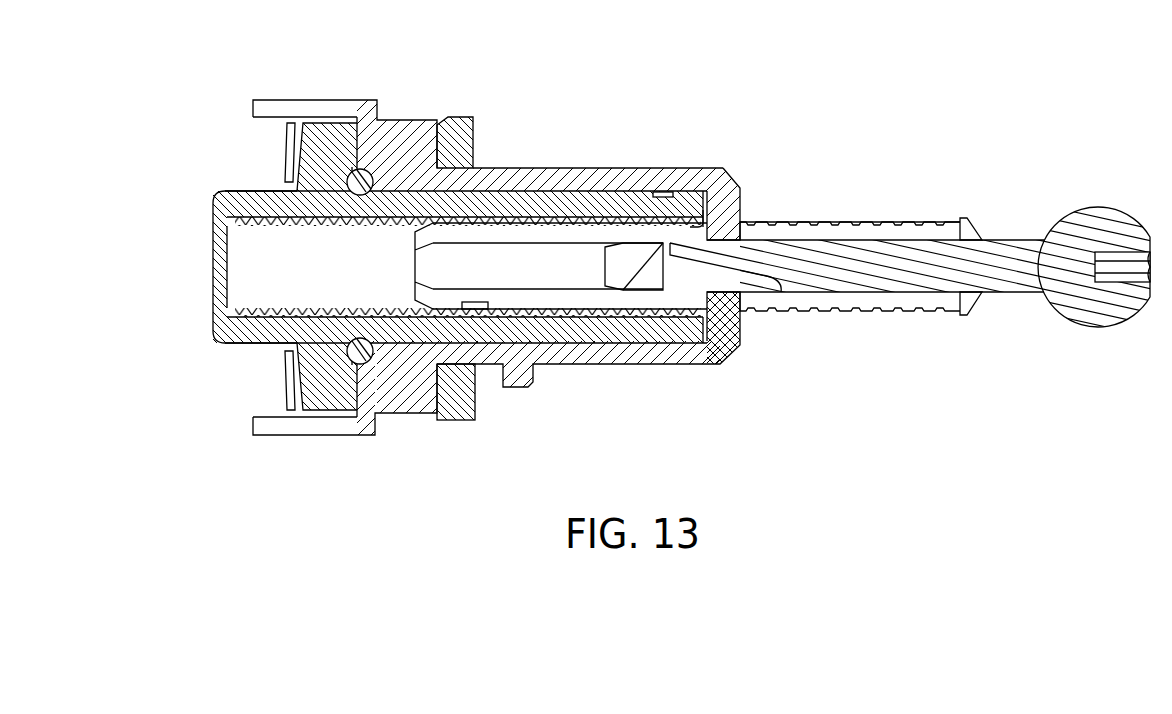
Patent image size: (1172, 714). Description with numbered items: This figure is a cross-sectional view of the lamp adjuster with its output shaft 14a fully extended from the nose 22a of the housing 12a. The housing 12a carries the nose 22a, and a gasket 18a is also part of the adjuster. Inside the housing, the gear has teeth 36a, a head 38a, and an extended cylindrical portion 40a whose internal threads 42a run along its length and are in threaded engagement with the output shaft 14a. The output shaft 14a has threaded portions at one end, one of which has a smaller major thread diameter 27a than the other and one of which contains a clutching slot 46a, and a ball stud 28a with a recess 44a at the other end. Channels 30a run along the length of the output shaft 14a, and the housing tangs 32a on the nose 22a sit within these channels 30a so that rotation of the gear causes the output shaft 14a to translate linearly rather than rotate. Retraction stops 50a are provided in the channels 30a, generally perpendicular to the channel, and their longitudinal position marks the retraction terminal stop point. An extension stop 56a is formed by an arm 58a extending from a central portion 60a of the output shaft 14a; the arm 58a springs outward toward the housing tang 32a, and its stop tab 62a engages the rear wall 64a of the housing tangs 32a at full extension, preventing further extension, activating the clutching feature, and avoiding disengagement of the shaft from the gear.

The housing 12a is at (408, 120).
The output shaft 14a is at (906, 210).
The gasket 18a is at (460, 397).
The nose 22a is at (567, 168).
The major thread diameter 27a is at (356, 172).
The ball stud 28a is at (1100, 208).
The channels 30a is at (882, 232).
The housing tangs 32a is at (720, 235).
The teeth 36a is at (300, 392).
The head 38a is at (230, 333).
The extended cylindrical portion 40a is at (510, 168).
The internal threads 42a is at (660, 193).
The recess 44a is at (1125, 277).
The clutching slot 46a is at (425, 268).
The retraction stops 50a is at (958, 232).
The extension stop 56a is at (686, 268).
The arm 58a is at (717, 256).
The central portion 60a is at (840, 267).
The stop tab 62a is at (695, 222).
The rear wall 64a is at (745, 350).